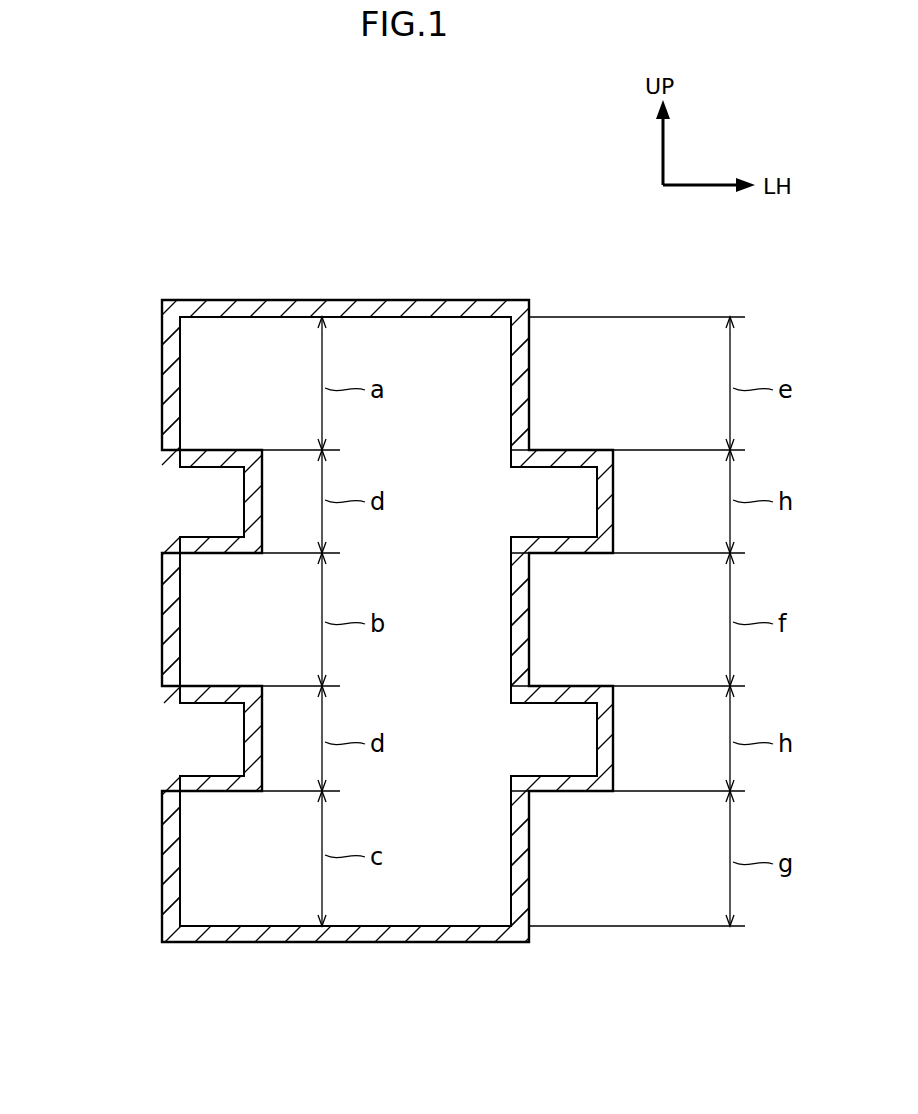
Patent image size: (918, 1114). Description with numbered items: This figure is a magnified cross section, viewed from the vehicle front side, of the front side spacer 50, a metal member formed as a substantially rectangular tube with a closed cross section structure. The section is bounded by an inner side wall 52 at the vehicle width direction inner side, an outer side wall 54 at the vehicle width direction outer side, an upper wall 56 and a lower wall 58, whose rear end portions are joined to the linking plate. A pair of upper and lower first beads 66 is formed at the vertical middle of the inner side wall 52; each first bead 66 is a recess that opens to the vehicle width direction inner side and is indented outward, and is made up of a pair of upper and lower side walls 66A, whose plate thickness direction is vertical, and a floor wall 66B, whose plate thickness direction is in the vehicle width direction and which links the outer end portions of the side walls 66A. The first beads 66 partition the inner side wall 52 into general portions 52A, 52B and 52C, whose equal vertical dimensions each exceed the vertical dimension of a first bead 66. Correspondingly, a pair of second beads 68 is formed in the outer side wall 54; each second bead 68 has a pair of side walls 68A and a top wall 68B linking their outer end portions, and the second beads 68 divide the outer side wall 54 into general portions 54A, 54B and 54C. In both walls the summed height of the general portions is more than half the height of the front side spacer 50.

The front side spacer 50 is at (144, 209).
The inner side wall 52 is at (149, 330).
The general portion 52A is at (162, 382).
The general portion 52B is at (162, 622).
The general portion 52C is at (162, 868).
The outer side wall 54 is at (537, 333).
The general portion 54A is at (530, 372).
The general portion 54B is at (529, 618).
The general portion 54C is at (530, 868).
The upper wall 56 is at (372, 300).
The lower wall 58 is at (375, 943).
The first bead 66 is at (167, 477).
The side wall 66A is at (222, 450).
The floor wall 66B is at (244, 508).
The second bead 68 is at (627, 496).
The side wall 68A is at (581, 450).
The top wall 68B is at (597, 497).